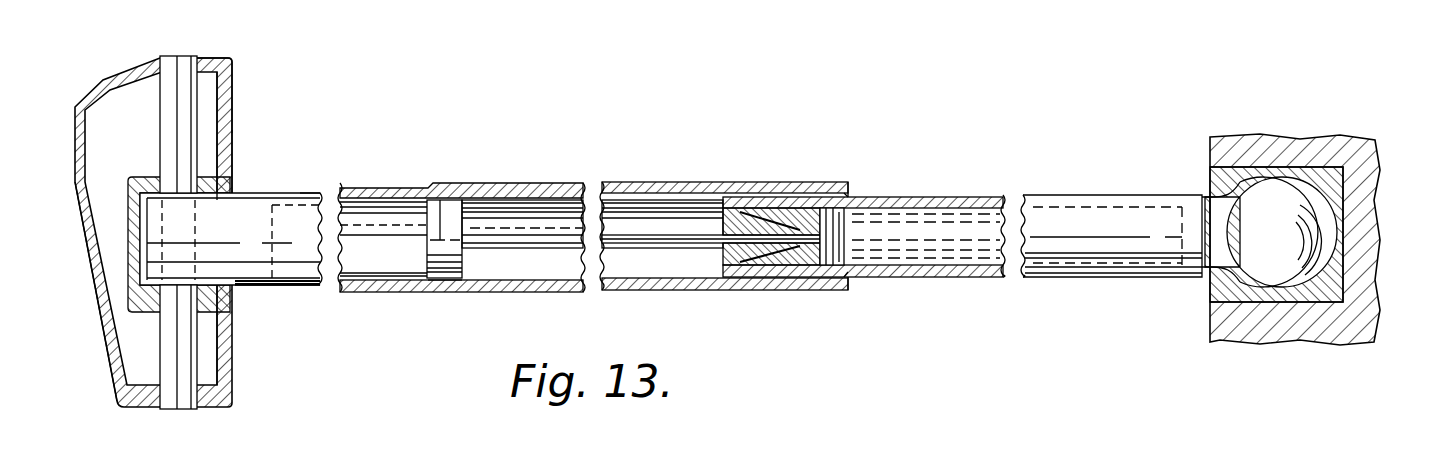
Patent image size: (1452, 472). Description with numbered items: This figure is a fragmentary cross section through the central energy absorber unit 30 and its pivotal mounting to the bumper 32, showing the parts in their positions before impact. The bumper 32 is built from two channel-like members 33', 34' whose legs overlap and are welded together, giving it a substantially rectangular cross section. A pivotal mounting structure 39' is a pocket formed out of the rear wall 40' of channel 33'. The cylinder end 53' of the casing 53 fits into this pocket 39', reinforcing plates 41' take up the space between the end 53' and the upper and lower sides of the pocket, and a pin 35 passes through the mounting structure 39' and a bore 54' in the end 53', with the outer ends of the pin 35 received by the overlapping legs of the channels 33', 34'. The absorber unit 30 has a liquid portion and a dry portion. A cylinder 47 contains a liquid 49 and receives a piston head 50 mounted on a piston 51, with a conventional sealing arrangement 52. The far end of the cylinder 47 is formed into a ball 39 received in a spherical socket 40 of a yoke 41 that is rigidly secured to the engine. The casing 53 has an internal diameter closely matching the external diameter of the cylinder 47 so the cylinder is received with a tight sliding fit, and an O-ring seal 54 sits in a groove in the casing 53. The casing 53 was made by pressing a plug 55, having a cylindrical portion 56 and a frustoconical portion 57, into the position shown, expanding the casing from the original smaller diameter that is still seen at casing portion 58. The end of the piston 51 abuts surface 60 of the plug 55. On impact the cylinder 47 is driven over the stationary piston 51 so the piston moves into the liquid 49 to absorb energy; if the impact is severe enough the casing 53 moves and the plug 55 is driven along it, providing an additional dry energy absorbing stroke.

The central energy absorber unit 30 is at (307, 193).
The bumper 32 is at (237, 78).
The channel-like member 33' is at (232, 95).
The channel-like member 34' is at (95, 291).
The pin 35 is at (176, 58).
The ball 39 is at (1274, 281).
The pivotal mounting structure 39' is at (166, 217).
The socket 40 is at (1267, 183).
The rear wall 40' is at (268, 161).
The yoke 41 is at (1320, 239).
The reinforcing plates 41' is at (255, 228).
The cylinder 47 is at (1067, 197).
The liquid 49 is at (930, 233).
The piston head 50 is at (857, 223).
The piston 51 is at (565, 232).
The sealing arrangement 52 is at (760, 267).
The casing 53 is at (593, 263).
The cylinder end 53' is at (266, 291).
The O-ring seal 54 is at (845, 269).
The bore 54' is at (231, 239).
The plug 55 is at (453, 288).
The cylindrical portion 56 is at (450, 200).
The frustoconical portion 57 is at (430, 283).
The casing portion 58 is at (318, 286).
The surface 60 is at (470, 217).